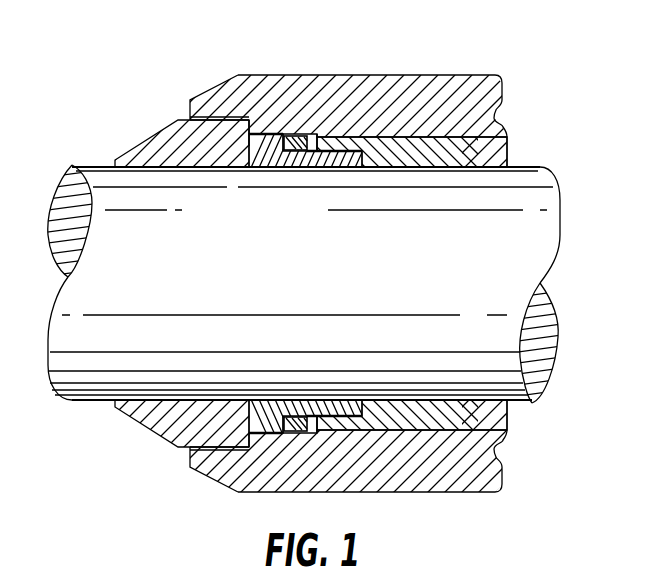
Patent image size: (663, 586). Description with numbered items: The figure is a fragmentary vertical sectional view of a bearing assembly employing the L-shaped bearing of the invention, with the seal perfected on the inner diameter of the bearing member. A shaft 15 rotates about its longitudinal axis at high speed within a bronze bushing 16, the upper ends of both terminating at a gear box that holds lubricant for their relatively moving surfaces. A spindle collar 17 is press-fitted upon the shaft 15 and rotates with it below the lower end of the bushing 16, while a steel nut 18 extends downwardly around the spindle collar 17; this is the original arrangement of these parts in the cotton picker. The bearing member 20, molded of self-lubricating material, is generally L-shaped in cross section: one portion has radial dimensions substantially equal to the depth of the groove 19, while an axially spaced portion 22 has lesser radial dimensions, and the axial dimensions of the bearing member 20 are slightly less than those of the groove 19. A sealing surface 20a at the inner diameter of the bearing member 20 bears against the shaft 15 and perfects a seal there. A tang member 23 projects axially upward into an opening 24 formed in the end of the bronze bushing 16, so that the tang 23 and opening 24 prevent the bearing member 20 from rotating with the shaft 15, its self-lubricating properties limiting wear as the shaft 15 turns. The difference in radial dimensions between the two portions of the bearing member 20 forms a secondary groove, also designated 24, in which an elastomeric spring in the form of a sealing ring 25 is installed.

The shaft 15 is at (357, 278).
The bronze bushing 16 is at (493, 153).
The spindle collar 17 is at (158, 142).
The steel nut 18 is at (410, 92).
The groove 19 is at (313, 134).
The bearing member 20 is at (233, 118).
The sealing surface 20a is at (253, 148).
The axially spaced portion 22 is at (274, 162).
The tang member 23 is at (343, 133).
The opening 24 is at (297, 135).
The sealing ring 25 is at (301, 162).